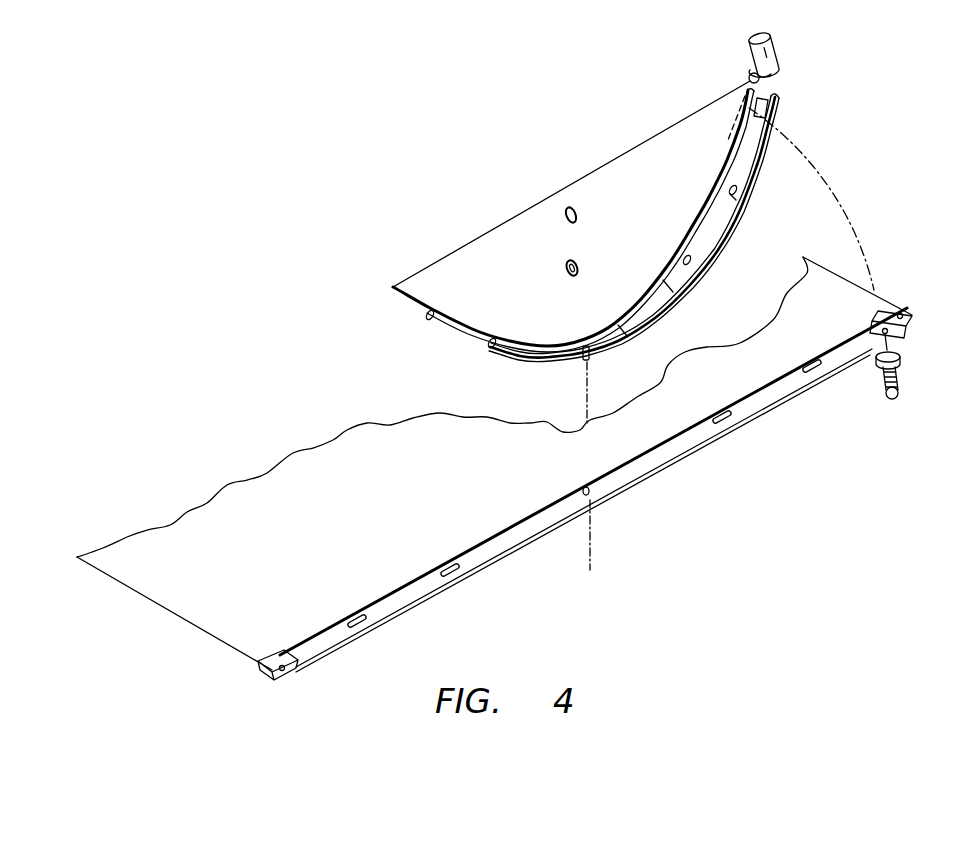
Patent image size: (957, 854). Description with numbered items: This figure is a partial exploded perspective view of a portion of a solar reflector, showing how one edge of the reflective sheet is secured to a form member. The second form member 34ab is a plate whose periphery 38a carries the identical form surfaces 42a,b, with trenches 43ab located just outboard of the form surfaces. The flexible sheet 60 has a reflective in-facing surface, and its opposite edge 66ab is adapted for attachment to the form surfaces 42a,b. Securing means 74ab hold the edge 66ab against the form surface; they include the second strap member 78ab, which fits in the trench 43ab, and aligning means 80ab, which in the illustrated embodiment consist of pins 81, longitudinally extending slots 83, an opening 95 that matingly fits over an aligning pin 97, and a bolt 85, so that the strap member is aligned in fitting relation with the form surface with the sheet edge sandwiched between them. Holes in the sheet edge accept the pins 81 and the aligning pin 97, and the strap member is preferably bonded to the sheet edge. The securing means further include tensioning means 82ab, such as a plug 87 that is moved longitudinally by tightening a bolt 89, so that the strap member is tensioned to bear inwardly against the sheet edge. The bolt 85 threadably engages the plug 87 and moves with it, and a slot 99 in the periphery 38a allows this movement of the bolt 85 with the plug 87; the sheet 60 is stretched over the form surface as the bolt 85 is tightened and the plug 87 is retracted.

The second form member 34ab is at (516, 285).
The periphery of second form member 38a is at (732, 237).
The form surfaces 42a,b is at (679, 284).
The trenches 43ab is at (629, 336).
The flexible sheet 60 is at (207, 525).
The opposite edge of flexible sheet 66ab is at (280, 640).
The securing means 74ab is at (820, 48).
The second strap member 78ab is at (639, 462).
The aligning means 80ab is at (832, 175).
The pins 81 is at (741, 199).
The tensioning means 82ab is at (784, 73).
The longitudinally extending slots 83 is at (810, 372).
The bolt 85 is at (902, 365).
The plug 87 is at (757, 47).
The bolt 89 is at (750, 78).
The opening 95 is at (582, 498).
The aligning pin 97 is at (588, 362).
The slot 99 is at (762, 104).